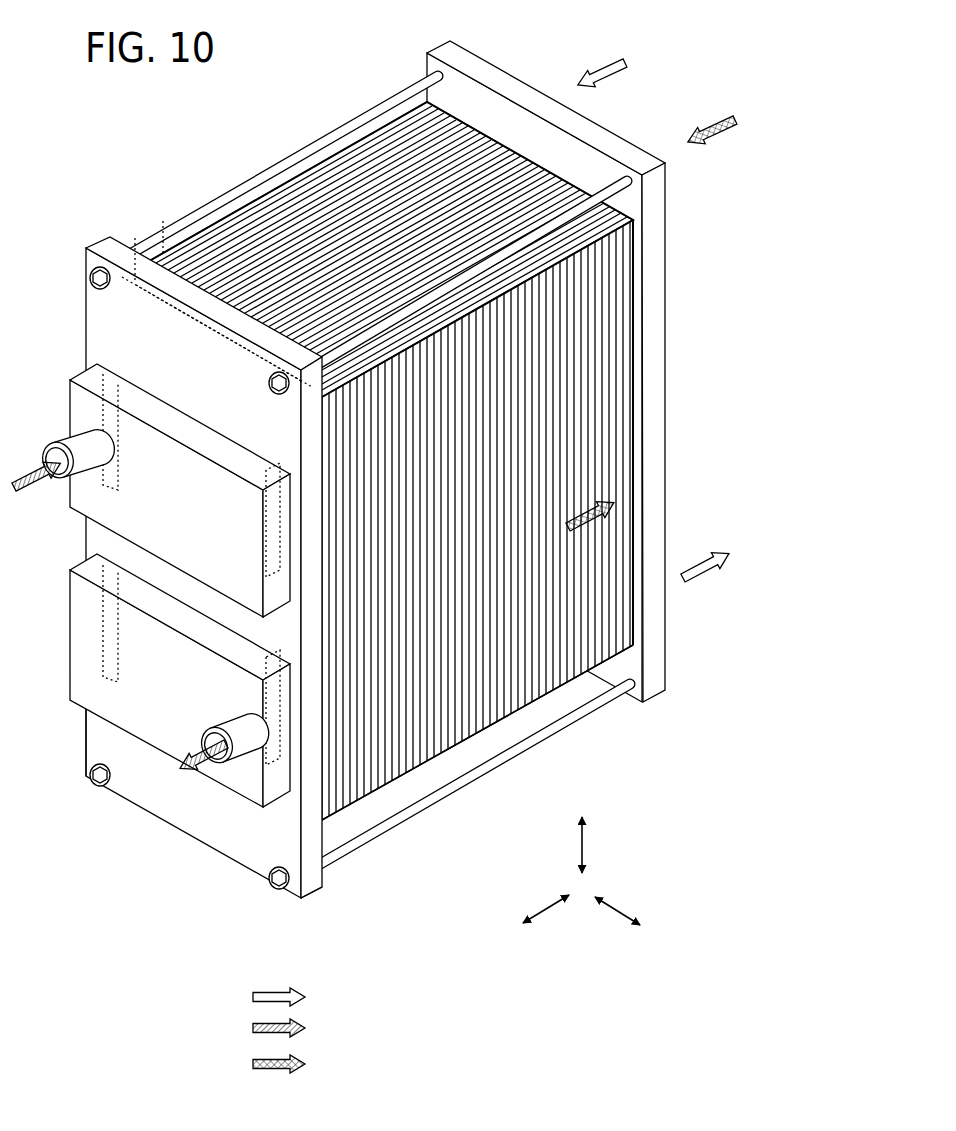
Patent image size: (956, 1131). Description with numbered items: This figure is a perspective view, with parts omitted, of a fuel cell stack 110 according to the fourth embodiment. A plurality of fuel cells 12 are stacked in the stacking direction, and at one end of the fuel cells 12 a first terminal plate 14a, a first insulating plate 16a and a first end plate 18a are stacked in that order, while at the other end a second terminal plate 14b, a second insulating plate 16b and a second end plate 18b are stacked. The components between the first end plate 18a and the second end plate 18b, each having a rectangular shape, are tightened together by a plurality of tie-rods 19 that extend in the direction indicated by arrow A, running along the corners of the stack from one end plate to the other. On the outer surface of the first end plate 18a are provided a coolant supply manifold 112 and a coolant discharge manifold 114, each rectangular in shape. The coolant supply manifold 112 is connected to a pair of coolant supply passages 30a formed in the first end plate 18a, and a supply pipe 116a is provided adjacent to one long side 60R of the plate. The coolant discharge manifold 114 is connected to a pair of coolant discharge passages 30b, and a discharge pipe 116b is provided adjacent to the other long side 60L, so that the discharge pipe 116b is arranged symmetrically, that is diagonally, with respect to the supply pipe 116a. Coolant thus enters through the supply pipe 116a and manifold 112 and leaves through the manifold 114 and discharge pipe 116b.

The fuel cell stack 110 is at (224, 109).
The fuel cells 12 is at (262, 197).
The first terminal plate 14a is at (224, 290).
The second terminal plate 14b is at (625, 300).
The first insulating plate 16a is at (202, 294).
The second insulating plate 16b is at (634, 277).
The first end plate 18a is at (92, 244).
The second end plate 18b is at (560, 76).
The tie-rods 19 is at (362, 124).
The coolant supply manifold 112 is at (72, 378).
The coolant discharge manifold 114 is at (72, 570).
The coolant supply passages 30a is at (118, 471).
The coolant discharge passages 30b is at (118, 655).
The supply pipe 116a is at (85, 466).
The discharge pipe 116b is at (222, 728).
The one long side 60R is at (84, 744).
The other long side 60L is at (320, 882).